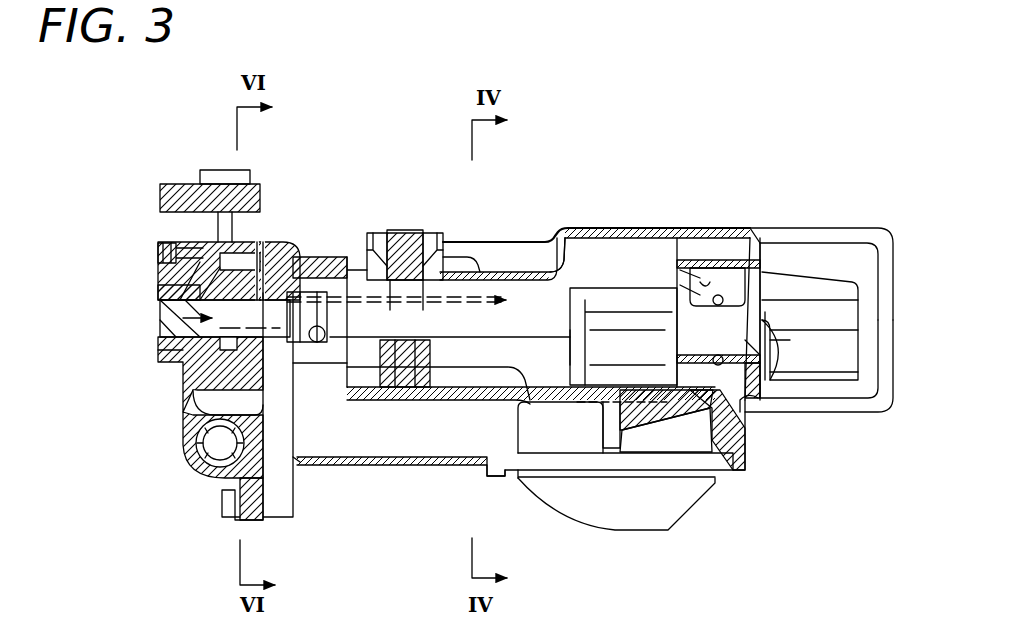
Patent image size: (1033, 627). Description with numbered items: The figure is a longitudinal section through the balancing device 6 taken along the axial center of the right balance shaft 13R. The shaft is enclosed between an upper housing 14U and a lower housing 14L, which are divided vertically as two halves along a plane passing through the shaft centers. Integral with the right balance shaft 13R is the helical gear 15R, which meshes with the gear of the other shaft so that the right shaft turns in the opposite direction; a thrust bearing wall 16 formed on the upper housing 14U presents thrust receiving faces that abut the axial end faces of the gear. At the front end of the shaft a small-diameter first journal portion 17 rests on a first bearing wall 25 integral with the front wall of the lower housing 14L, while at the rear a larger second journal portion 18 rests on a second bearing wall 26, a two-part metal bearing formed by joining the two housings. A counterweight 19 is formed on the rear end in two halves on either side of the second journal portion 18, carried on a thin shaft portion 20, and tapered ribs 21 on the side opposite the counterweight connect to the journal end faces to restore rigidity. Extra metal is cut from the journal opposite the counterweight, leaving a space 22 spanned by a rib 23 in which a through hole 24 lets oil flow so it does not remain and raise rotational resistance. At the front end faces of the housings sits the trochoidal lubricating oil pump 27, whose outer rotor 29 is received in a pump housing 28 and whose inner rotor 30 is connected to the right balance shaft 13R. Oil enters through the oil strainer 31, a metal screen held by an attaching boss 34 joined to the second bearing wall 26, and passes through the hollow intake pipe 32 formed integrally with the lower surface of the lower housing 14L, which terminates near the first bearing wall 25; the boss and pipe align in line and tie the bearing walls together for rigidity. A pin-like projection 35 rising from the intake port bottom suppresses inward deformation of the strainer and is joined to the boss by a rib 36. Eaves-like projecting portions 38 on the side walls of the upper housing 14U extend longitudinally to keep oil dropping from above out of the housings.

The balancing device 6 is at (650, 128).
The right balance shaft 13R is at (532, 290).
The upper housing 14U is at (850, 230).
The lower housing 14L is at (882, 412).
The helical gear 15R is at (410, 390).
The thrust bearing wall 16 is at (395, 283).
The first journal portion 17 is at (333, 262).
The second journal portion 18 is at (770, 345).
The counterweight 19 is at (600, 375).
The shaft portion 20 is at (605, 300).
The tapered rib 21 is at (635, 286).
The space 22 is at (745, 265).
The rib 23 is at (690, 268).
The through hole 24 is at (716, 266).
The first bearing wall 25 is at (320, 377).
The second bearing wall 26 is at (760, 405).
The lubricating oil pump 27 is at (182, 322).
The pump housing 28 is at (190, 420).
The outer rotor 29 is at (215, 248).
The inner rotor 30 is at (183, 385).
The oil strainer 31 is at (672, 460).
The intake pipe 32 is at (480, 470).
The attaching boss 34 is at (746, 472).
The pin-like projection 35 is at (612, 435).
The rib 36 is at (655, 415).
The eaves-like projecting portion 38 is at (487, 258).